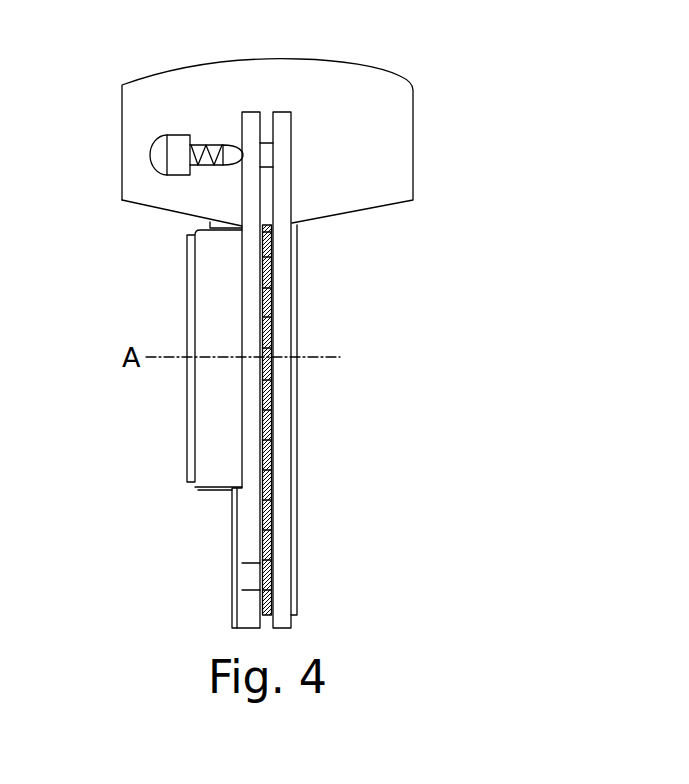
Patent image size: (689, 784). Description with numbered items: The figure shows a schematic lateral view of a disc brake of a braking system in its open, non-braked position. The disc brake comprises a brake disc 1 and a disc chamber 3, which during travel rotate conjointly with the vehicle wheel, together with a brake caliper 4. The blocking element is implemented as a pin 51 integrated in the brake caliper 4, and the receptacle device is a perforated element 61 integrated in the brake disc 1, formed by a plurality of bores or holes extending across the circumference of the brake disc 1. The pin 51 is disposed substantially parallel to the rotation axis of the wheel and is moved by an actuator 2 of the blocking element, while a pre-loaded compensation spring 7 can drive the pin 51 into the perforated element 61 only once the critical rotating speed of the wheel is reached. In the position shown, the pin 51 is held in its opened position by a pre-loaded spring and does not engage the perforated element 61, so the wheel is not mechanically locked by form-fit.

The brake disc 1 is at (253, 274).
The actuator of the blocking element 2 is at (160, 153).
The disc chamber 3 is at (210, 290).
The brake caliper 4 is at (392, 138).
The compensation spring of the intermediate position 7 is at (197, 143).
The pin 51 is at (233, 147).
The perforated element 61 is at (262, 157).